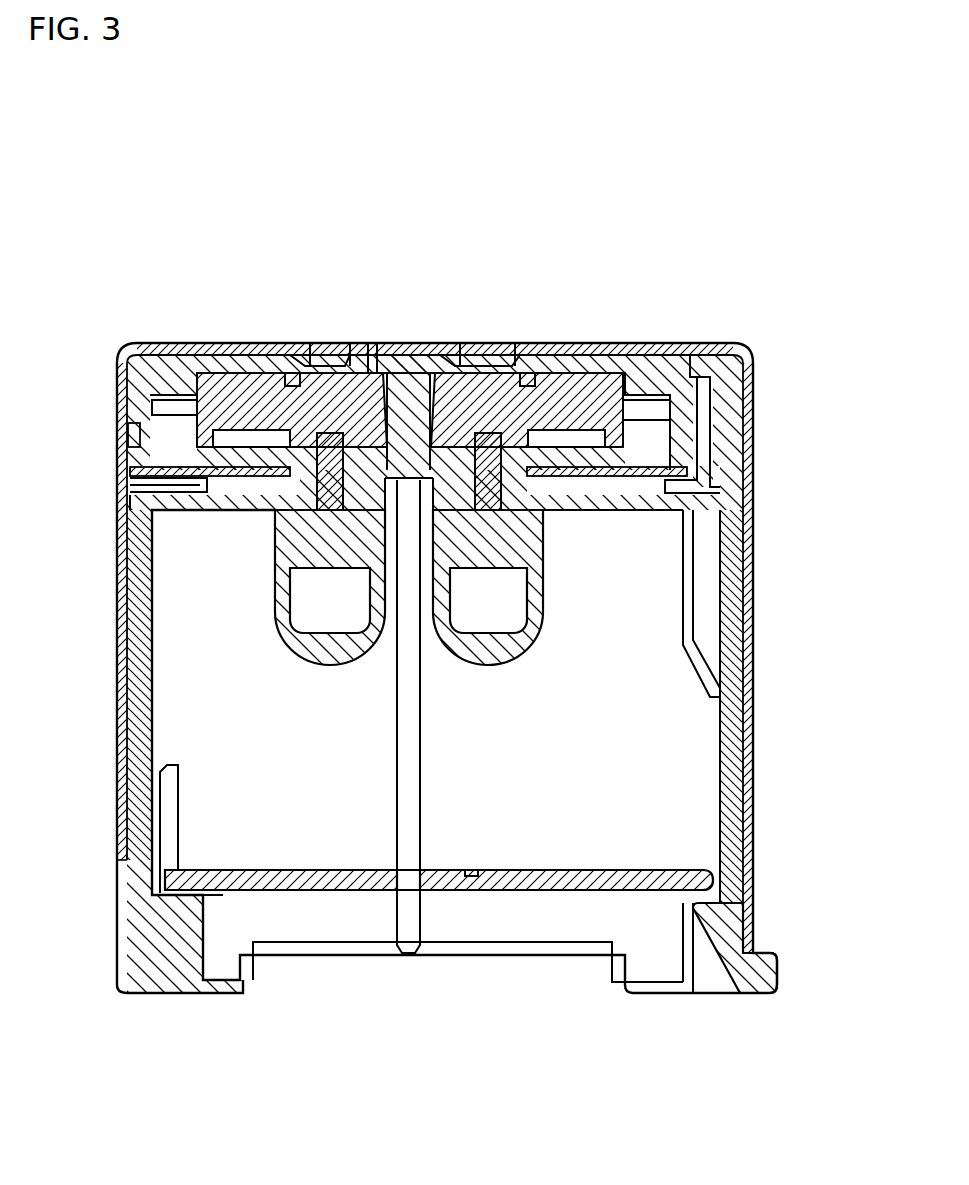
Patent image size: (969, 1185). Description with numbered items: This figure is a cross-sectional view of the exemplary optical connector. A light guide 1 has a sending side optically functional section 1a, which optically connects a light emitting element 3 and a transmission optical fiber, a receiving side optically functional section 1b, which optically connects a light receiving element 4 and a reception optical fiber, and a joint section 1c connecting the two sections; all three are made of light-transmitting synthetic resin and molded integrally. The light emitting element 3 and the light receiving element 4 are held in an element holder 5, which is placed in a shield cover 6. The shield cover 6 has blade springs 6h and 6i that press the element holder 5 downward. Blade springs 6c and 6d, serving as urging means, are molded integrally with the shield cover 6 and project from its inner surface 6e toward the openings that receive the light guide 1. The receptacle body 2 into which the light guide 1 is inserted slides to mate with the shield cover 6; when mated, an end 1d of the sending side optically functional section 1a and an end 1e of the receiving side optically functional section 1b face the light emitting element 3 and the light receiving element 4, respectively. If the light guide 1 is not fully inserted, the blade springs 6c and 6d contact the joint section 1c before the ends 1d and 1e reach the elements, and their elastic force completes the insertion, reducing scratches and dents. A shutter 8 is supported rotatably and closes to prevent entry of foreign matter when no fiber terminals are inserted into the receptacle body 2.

The light guide 1 is at (330, 558).
The sending side optically functional section 1a is at (295, 582).
The receiving side optically functional section 1b is at (493, 542).
The joint section 1c is at (505, 582).
The end of the sending side optically functional section 1d is at (327, 517).
The end of the receiving side optically functional section 1e is at (555, 512).
The receptacle body 2 is at (737, 917).
The light emitting element 3 is at (225, 397).
The light receiving element 4 is at (590, 407).
The element holder 5 is at (165, 443).
The shield cover 6 is at (405, 627).
The blade spring 6c is at (377, 362).
The blade spring 6d is at (444, 360).
The inner surface of the shield cover 6e is at (160, 497).
The blade spring 6h is at (325, 357).
The blade spring 6i is at (492, 357).
The shutter 8 is at (613, 873).